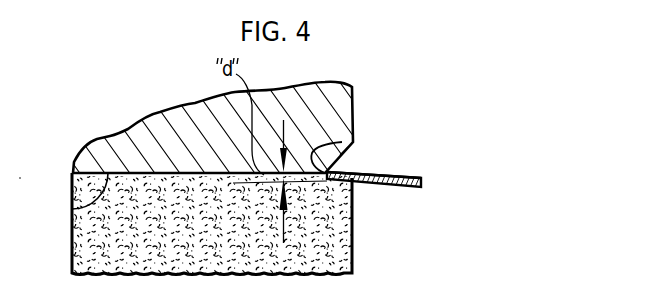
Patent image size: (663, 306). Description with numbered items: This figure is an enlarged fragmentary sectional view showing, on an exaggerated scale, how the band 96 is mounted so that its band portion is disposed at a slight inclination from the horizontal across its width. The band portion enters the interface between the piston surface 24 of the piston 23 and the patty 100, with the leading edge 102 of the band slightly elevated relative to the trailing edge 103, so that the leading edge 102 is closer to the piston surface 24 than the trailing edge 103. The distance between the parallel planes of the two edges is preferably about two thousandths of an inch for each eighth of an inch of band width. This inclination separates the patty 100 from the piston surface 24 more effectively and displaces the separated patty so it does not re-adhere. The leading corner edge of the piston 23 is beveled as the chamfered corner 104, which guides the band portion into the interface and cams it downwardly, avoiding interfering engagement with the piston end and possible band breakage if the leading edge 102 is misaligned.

The piston 23 is at (345, 108).
The piston surface 24 is at (76, 210).
The band 96 is at (417, 173).
The patty 100 is at (354, 226).
The leading edge 102 is at (342, 142).
The trailing edge 103 is at (421, 179).
The chamfered corner 104 is at (349, 149).